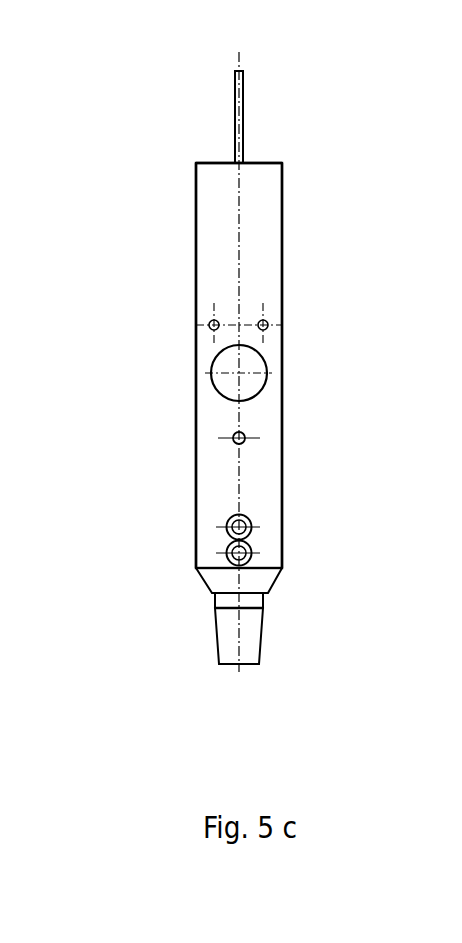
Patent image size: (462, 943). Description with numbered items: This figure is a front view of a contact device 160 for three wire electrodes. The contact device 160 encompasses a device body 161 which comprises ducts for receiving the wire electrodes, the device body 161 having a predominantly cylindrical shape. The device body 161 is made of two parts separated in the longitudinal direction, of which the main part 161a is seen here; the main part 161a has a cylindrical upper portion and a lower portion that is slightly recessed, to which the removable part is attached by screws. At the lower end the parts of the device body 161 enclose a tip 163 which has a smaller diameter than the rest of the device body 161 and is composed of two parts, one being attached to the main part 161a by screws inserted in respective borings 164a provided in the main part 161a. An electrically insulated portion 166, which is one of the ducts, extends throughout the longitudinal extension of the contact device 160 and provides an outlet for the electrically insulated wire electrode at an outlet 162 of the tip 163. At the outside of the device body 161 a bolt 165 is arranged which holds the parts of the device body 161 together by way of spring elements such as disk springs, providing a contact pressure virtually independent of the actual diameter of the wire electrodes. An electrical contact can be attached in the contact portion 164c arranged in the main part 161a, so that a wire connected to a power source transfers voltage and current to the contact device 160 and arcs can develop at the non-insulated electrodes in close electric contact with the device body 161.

The contact device 160 is at (188, 266).
The device body 161 is at (282, 287).
The main part 161a is at (282, 213).
The outlet 162 is at (222, 677).
The tip 163 is at (250, 638).
The borings 164a is at (227, 525).
The contact portion 164c is at (247, 435).
The bolt 165 is at (225, 367).
The electrically insulated portion 166 is at (243, 88).